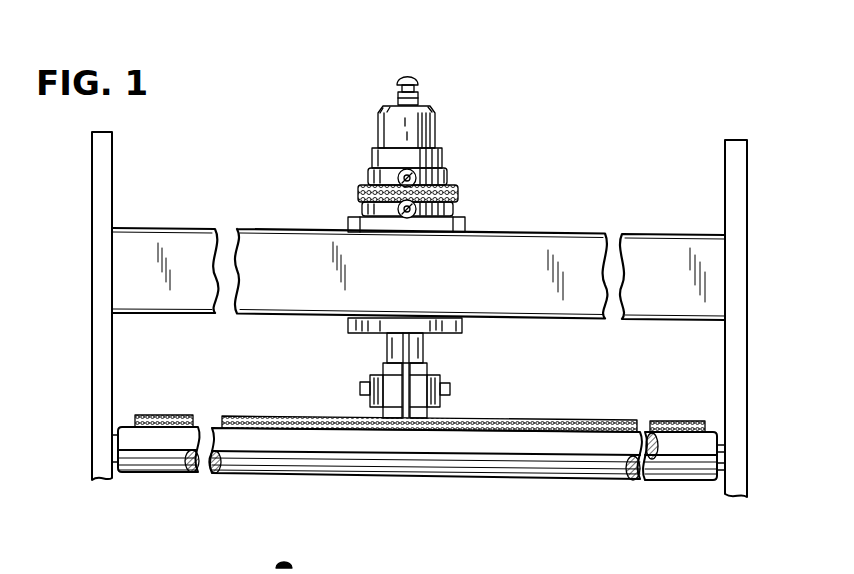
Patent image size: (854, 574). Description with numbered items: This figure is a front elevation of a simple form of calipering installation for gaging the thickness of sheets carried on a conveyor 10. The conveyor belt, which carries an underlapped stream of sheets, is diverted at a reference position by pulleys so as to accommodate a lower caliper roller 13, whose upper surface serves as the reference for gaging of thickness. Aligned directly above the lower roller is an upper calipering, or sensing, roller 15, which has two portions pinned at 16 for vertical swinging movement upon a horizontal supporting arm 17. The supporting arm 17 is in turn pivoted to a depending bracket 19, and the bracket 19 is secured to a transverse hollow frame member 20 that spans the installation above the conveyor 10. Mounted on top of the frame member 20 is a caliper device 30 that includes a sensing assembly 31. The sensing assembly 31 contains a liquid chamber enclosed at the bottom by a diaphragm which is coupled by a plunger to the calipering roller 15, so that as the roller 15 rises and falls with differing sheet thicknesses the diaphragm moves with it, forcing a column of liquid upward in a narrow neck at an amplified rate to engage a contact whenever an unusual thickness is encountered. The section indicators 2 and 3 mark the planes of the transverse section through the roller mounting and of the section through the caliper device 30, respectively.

The section line 2- 2 is at (467, 53).
The section line 3- 3 is at (392, 48).
The conveyor 10 is at (417, 479).
The lower caliper roller 13 is at (408, 482).
The upper calipering roller 15 is at (418, 380).
The pin 16 is at (362, 387).
The horizontal supporting arm 17 is at (383, 378).
The depending bracket 19 is at (398, 352).
The transverse hollow frame member 20 is at (290, 238).
The caliper device 30 is at (512, 214).
The sensing assembly 31 is at (481, 165).